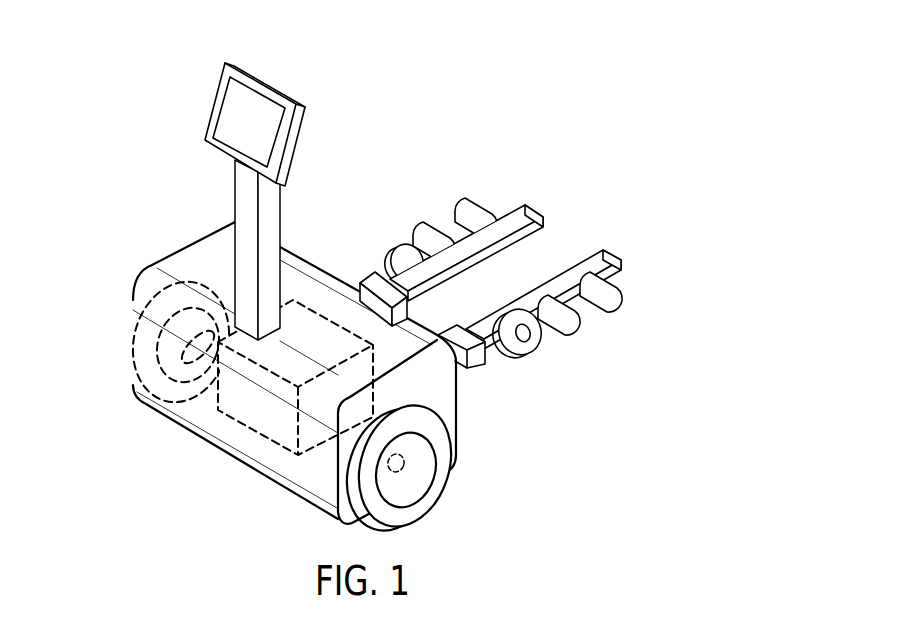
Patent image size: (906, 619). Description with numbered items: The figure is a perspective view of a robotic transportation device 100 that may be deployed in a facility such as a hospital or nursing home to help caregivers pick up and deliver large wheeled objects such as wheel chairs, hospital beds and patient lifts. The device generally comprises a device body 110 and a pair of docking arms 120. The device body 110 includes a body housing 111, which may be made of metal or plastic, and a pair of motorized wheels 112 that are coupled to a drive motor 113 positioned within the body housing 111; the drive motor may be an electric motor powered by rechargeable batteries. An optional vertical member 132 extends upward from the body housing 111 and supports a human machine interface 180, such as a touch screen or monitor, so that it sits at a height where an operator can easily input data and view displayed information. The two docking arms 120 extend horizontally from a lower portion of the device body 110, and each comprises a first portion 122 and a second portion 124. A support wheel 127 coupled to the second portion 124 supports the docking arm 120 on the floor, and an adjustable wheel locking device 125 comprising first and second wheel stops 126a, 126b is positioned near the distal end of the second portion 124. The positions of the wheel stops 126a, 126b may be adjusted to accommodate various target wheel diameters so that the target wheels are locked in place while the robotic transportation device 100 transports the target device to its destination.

The robotic transportation device 100 is at (402, 285).
The device body 110 is at (257, 289).
The body housing 111 is at (150, 275).
The motorized wheels 112 is at (135, 335).
The drive motor 113 is at (230, 428).
The docking arms 120 is at (545, 244).
The first portion 122 is at (362, 283).
The second portion 124 is at (540, 207).
The adjustable wheel locking device 125 is at (543, 232).
The first wheel stop 126a is at (460, 198).
The second wheel stop 126b is at (415, 222).
The support wheel 127 is at (402, 250).
The vertical member 132 is at (235, 176).
The human machine interface (HMI) 180 is at (259, 80).